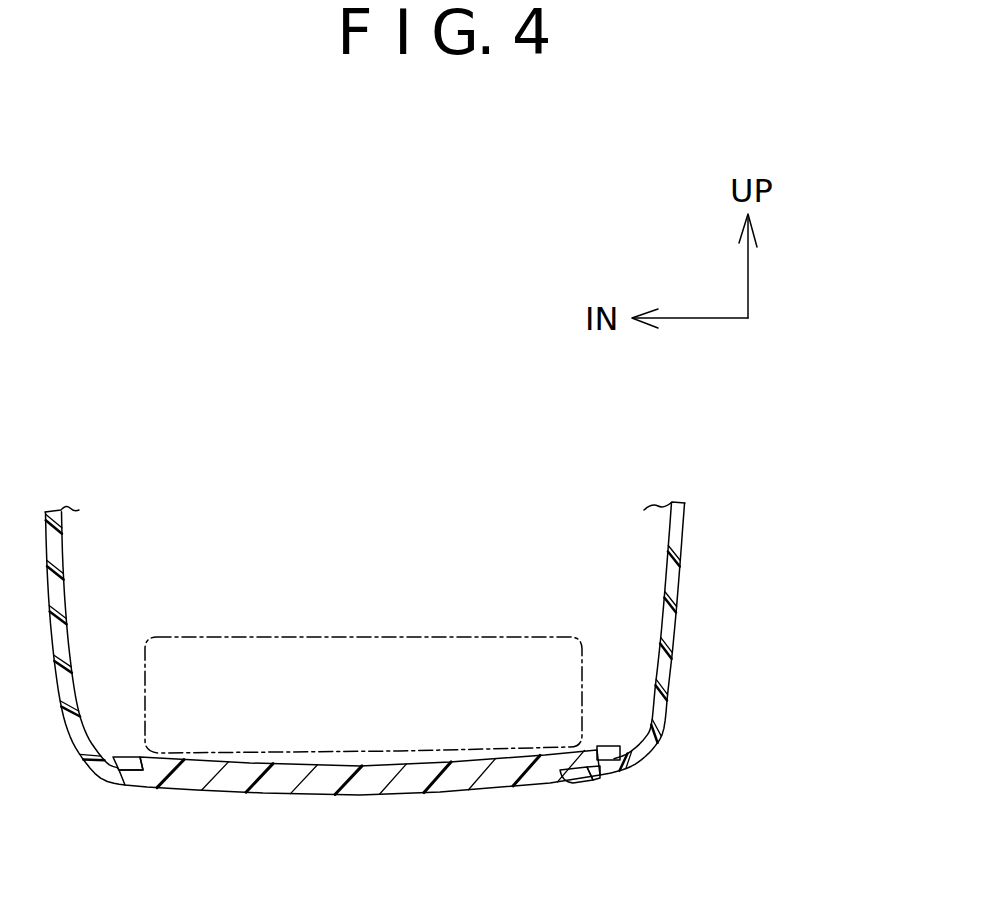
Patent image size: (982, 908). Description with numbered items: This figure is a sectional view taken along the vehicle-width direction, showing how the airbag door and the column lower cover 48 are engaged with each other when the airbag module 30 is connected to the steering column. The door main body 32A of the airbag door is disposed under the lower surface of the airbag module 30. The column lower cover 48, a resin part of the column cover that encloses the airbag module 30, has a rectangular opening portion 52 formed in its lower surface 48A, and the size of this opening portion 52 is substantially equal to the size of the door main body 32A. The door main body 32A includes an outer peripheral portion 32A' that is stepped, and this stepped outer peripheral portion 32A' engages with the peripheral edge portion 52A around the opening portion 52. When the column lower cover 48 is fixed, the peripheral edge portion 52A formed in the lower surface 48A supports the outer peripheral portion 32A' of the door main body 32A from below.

The airbag module 30 is at (279, 632).
The door main body 32A is at (356, 822).
The outer peripheral portion 32A' is at (604, 669).
The column lower cover 48 is at (684, 651).
The lower surface 48A is at (92, 778).
The opening portion 52 is at (555, 786).
The peripheral edge portion 52A is at (592, 781).